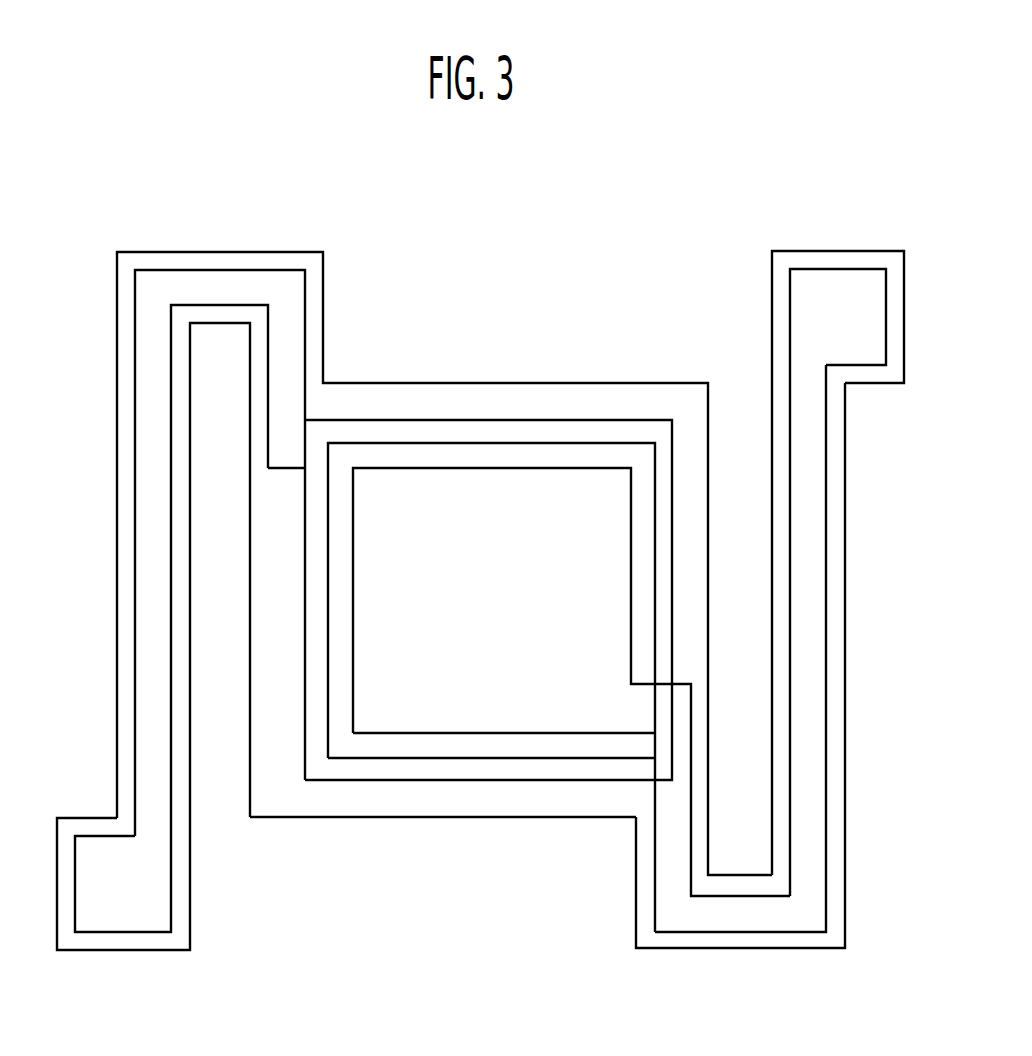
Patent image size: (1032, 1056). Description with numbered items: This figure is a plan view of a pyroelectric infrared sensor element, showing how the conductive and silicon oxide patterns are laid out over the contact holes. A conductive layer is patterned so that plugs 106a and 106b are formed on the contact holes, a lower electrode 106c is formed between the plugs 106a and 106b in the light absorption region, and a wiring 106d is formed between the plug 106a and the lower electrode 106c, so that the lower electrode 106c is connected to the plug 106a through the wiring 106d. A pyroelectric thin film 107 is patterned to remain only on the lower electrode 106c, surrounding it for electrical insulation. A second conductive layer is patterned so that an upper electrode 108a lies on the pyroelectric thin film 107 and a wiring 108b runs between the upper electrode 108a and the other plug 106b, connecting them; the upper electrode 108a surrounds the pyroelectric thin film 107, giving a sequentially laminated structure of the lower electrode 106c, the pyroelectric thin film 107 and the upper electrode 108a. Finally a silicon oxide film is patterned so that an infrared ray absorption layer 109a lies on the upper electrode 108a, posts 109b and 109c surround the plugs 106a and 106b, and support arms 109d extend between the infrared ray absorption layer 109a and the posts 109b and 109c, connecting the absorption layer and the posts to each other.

The plug 106a is at (868, 350).
The plug 106b is at (94, 850).
The lower electrode 106c is at (465, 715).
The wiring 106d is at (810, 672).
The pyroelectric thin film 107 is at (512, 456).
The upper electrode 108a is at (400, 432).
The wiring 108b is at (149, 426).
The infrared ray absorption layer 109a is at (314, 815).
The post 109b is at (798, 258).
The post 109c is at (131, 952).
The support arms 109d is at (128, 499).